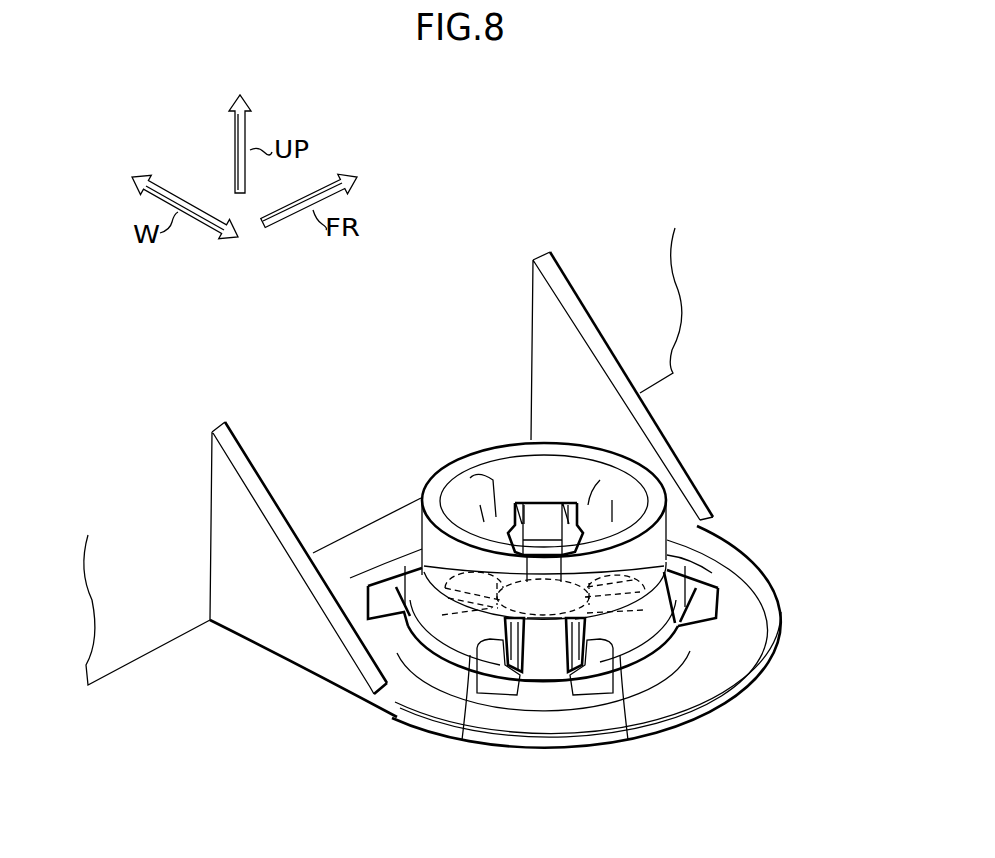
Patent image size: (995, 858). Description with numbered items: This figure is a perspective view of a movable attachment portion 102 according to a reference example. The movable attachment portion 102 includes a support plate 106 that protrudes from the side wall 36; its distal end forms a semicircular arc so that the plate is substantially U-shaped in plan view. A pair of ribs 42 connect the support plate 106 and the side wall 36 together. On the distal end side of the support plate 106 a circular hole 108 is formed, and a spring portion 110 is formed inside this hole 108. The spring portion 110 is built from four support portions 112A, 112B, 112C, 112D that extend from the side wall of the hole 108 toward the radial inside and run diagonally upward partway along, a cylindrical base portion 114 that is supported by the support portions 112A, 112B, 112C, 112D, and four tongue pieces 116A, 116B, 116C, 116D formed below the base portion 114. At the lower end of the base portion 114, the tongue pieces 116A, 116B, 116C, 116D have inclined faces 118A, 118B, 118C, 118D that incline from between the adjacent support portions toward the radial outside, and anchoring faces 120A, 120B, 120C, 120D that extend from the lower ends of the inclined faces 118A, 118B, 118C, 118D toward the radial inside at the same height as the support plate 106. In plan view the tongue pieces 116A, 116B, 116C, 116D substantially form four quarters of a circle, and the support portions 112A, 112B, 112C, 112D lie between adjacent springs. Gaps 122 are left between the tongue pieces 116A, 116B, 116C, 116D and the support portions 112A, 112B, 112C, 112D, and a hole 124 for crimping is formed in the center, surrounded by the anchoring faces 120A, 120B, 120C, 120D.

The side wall 36 is at (653, 272).
The ribs 42 is at (587, 317).
The movable attachment portion 102 is at (717, 413).
The support plate 106 is at (735, 535).
The circular hole 108 is at (687, 640).
The spring portion 110 is at (462, 446).
The support portion 112A is at (540, 672).
The support portion 112B is at (700, 587).
The support portion 112C is at (543, 520).
The support portion 112D is at (398, 567).
The cylindrical base portion 114 is at (519, 500).
The tongue piece 116A is at (683, 706).
The tongue piece 116B is at (707, 475).
The tongue piece 116C is at (381, 472).
The tongue piece 116D is at (418, 706).
The inclined face 118A is at (615, 668).
The inclined face 118B is at (610, 523).
The inclined face 118C is at (493, 517).
The inclined face 118D is at (480, 665).
The anchoring face 120A is at (590, 700).
The anchoring face 120B is at (582, 508).
The anchoring face 120C is at (482, 503).
The anchoring face 120D is at (505, 700).
The gaps 122 is at (575, 700).
The hole for crimping 124 is at (410, 650).